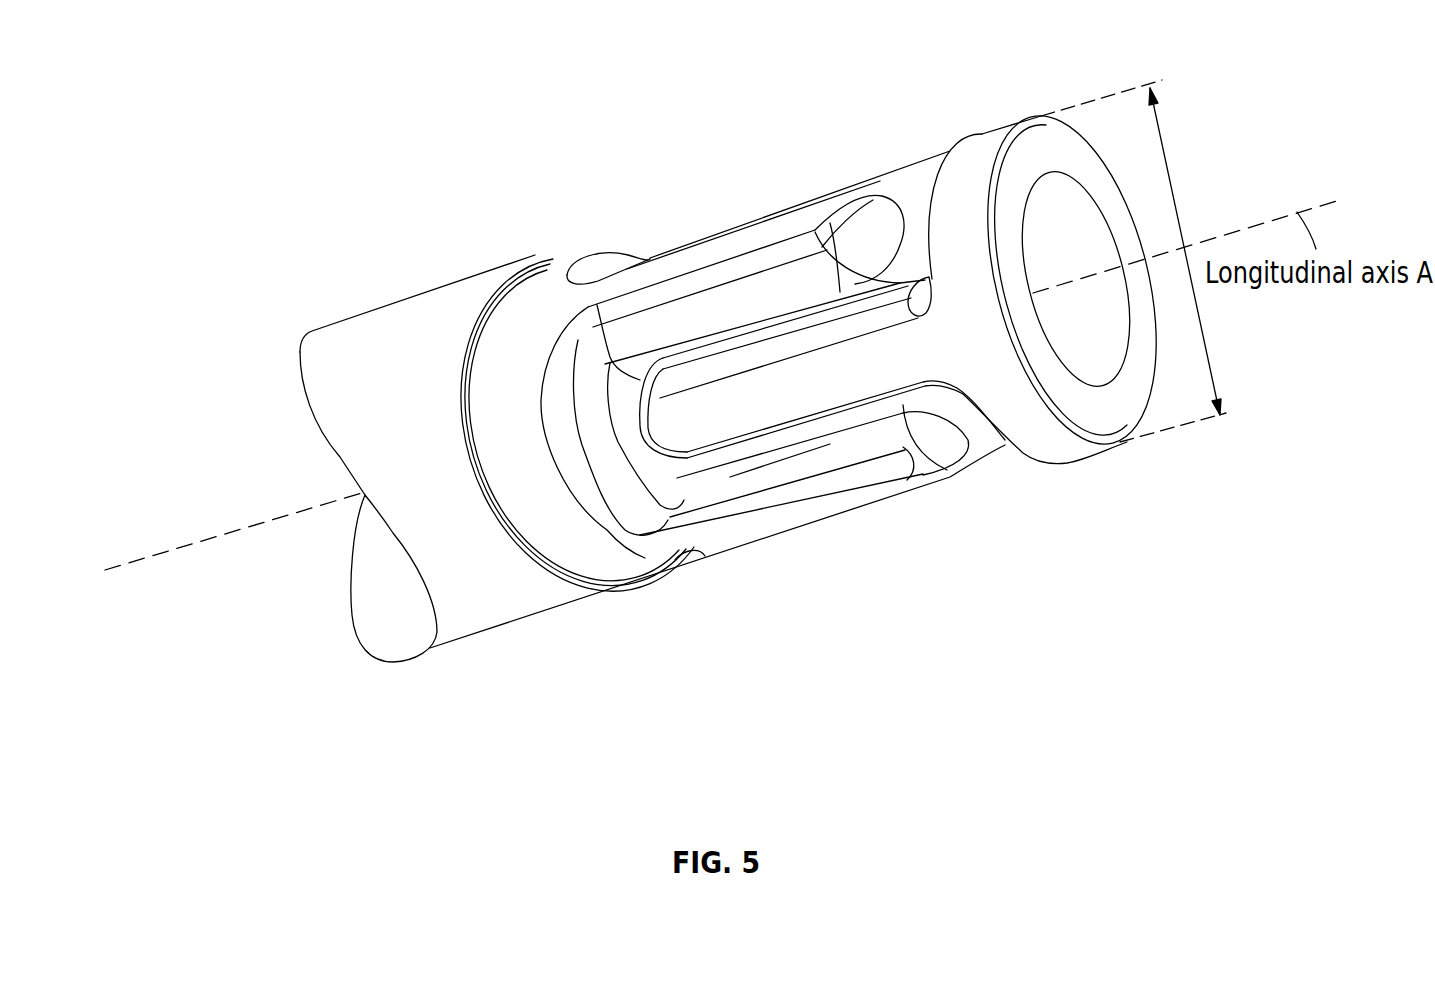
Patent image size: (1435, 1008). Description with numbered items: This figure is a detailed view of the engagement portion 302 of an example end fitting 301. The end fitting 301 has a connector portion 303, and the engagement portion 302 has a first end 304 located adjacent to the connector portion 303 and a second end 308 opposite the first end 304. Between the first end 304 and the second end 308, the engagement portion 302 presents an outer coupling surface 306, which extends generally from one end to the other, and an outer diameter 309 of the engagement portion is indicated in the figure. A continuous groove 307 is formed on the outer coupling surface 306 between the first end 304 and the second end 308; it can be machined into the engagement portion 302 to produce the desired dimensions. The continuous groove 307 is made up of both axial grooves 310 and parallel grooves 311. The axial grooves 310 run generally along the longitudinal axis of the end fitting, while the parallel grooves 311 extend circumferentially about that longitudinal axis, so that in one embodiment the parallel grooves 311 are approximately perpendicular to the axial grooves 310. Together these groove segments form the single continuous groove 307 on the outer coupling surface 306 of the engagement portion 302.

The end fitting 301 is at (268, 101).
The engagement portion 302 is at (1023, 93).
The connector portion 303 is at (547, 233).
The first end 304 is at (597, 593).
The outer coupling surface 306 is at (845, 508).
The continuous groove 307 is at (943, 450).
The second end 308 is at (1107, 413).
The outer diameter 309 is at (1162, 151).
The axial grooves 310 is at (663, 339).
The parallel grooves 311 is at (995, 445).